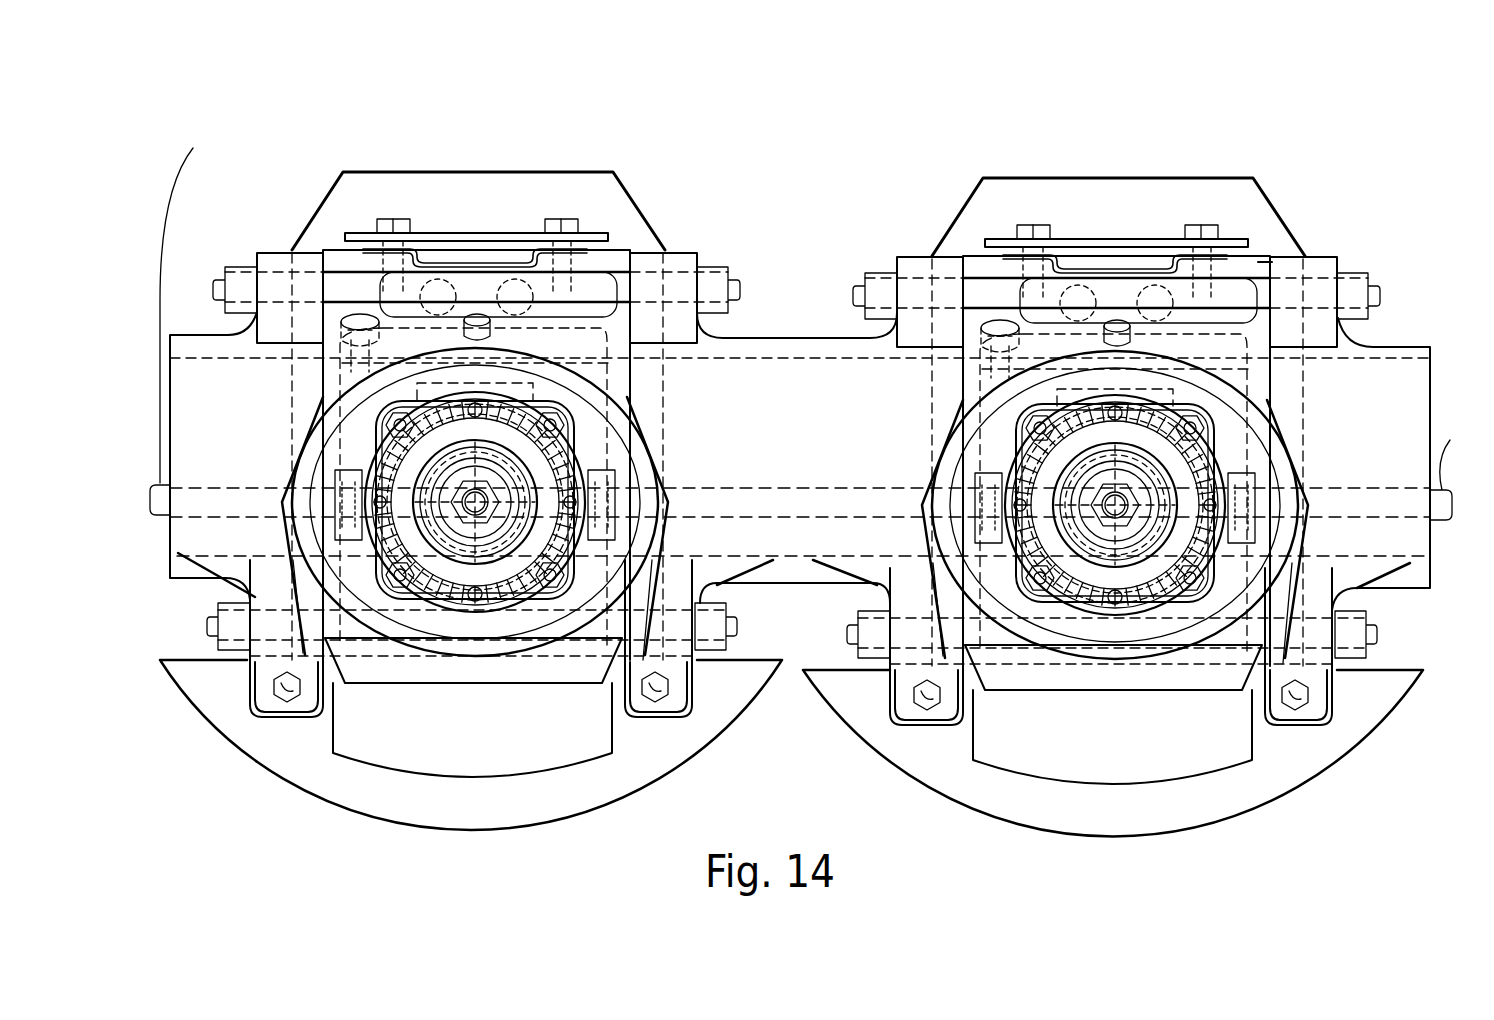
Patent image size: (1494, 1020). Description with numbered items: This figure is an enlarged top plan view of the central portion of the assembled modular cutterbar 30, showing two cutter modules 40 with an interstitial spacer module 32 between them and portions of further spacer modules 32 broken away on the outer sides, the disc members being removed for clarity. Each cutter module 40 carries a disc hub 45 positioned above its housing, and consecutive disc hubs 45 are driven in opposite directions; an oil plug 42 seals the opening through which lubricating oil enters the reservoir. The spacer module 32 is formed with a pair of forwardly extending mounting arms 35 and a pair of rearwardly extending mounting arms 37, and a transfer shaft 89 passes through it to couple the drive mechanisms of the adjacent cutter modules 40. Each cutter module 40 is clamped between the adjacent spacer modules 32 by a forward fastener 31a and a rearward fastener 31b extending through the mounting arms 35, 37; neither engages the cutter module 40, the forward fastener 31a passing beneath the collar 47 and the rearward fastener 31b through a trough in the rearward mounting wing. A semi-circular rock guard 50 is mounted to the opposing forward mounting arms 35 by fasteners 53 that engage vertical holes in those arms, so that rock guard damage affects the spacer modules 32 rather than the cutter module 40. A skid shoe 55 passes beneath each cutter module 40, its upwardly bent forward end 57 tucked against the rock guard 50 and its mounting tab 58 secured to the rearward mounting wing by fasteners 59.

The modular cutterbar 30 is at (1289, 162).
The forward fastener 31a is at (347, 620).
The rearward fastener 31b is at (594, 288).
The spacer module 32 is at (172, 335).
The forward mounting arm 35 is at (268, 706).
The rearward mounting arm 37 is at (265, 253).
The cutter module 40 is at (1258, 260).
The oil plug 42 is at (348, 318).
The disc hub 45 is at (520, 594).
The collar 47 is at (418, 630).
The rock guard 50 is at (660, 787).
The fastener 53 is at (927, 712).
The skid shoe 55 is at (467, 233).
The forward end 57 is at (482, 683).
The mounting tab 58 is at (478, 262).
The fasteners 59 is at (391, 219).
The transfer shaft 89 is at (814, 323).